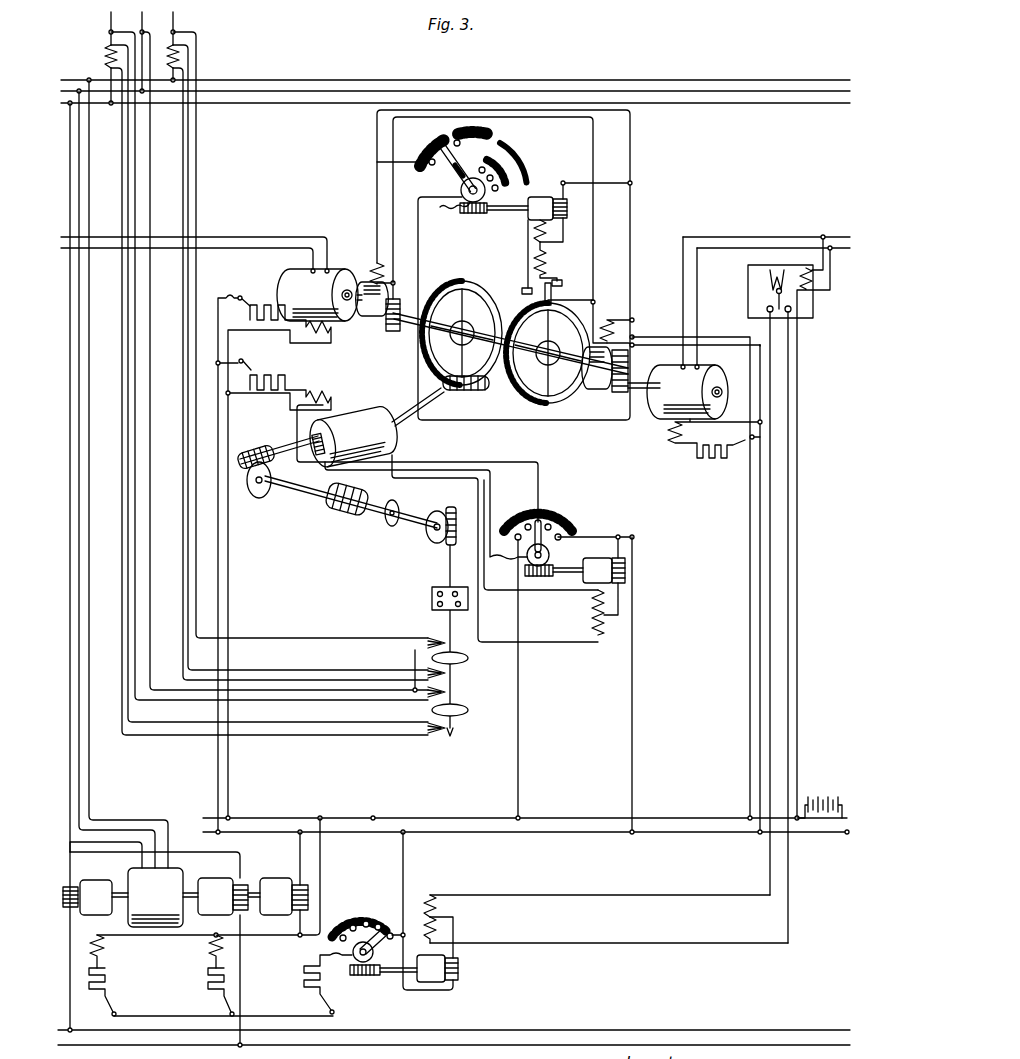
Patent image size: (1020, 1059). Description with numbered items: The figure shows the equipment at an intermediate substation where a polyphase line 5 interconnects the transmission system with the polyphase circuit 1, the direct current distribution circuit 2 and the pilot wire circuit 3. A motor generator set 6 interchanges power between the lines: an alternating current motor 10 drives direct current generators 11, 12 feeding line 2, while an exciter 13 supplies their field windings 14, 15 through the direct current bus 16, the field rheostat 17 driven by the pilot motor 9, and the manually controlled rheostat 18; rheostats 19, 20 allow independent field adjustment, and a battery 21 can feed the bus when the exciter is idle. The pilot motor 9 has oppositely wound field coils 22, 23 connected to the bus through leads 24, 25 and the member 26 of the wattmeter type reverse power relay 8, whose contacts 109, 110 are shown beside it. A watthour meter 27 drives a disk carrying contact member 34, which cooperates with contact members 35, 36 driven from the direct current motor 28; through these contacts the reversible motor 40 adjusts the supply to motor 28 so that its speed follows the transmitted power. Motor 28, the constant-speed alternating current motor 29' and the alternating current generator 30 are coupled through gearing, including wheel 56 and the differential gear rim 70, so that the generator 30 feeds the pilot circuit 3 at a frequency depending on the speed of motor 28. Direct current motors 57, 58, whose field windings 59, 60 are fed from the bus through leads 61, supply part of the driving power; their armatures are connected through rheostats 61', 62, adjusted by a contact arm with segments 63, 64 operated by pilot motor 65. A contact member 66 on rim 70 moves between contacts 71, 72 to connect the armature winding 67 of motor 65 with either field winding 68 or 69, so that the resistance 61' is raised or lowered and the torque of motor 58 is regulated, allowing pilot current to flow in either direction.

The polyphase circuit 1 is at (284, 100).
The direct current distribution circuit 2 is at (410, 1034).
The pilot wire circuit 3 is at (275, 250).
The polyphase line 5 is at (173, 13).
The motor generator set 6 is at (100, 825).
The reverse power relay 8 is at (748, 281).
The pilot motor 9 is at (419, 911).
The alternating current motor 10 is at (163, 897).
The direct current generator 11 is at (95, 897).
The direct current generator 12 is at (229, 896).
The exciter 13 is at (284, 883).
The field winding 14 is at (105, 944).
The field winding 15 is at (210, 945).
The direct current bus 16 is at (268, 834).
The field rheostat 17 is at (374, 912).
The manually controlled rheostat 18 is at (302, 972).
The manually controlled rheostat 19 is at (108, 970).
The manually controlled rheostat 20 is at (206, 971).
The battery 21 is at (822, 797).
The field coil 22 is at (440, 903).
The field coil 23 is at (445, 927).
The lead 24 is at (552, 895).
The lead 25 is at (552, 945).
The member of reverse power relay 26 is at (776, 296).
The watthour meter 27 is at (481, 680).
The direct current motor 28 is at (342, 428).
The alternating current motor 29' is at (318, 307).
The alternating current generator 30 is at (680, 420).
The contact member 34 is at (383, 522).
The contact member 35 is at (350, 510).
The contact member 36 is at (392, 502).
The reversible motor 40 is at (569, 666).
The gear wheel 56 is at (457, 283).
The direct current motor 57 is at (378, 306).
The direct current motor 58 is at (605, 369).
The field winding 59 is at (376, 265).
The field winding 60 is at (607, 320).
The leads 61 is at (741, 483).
The rheostat 61' is at (422, 143).
The rheostat 62 is at (505, 170).
The conductive segment 63 is at (474, 148).
The conductive segment 64 is at (462, 182).
The pilot motor 65 is at (522, 224).
The contact member 66 is at (543, 298).
The armature winding 67 is at (580, 211).
The field winding 68 is at (538, 240).
The field winding 69 is at (552, 258).
The differential gear rim 70 is at (522, 395).
The contact 71 is at (522, 289).
The contact 72 is at (563, 284).
The contact 109 is at (792, 310).
The contact 110 is at (766, 310).